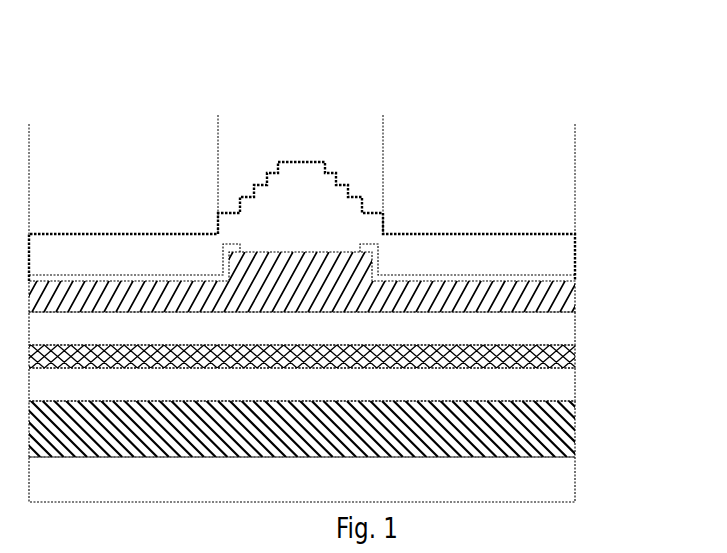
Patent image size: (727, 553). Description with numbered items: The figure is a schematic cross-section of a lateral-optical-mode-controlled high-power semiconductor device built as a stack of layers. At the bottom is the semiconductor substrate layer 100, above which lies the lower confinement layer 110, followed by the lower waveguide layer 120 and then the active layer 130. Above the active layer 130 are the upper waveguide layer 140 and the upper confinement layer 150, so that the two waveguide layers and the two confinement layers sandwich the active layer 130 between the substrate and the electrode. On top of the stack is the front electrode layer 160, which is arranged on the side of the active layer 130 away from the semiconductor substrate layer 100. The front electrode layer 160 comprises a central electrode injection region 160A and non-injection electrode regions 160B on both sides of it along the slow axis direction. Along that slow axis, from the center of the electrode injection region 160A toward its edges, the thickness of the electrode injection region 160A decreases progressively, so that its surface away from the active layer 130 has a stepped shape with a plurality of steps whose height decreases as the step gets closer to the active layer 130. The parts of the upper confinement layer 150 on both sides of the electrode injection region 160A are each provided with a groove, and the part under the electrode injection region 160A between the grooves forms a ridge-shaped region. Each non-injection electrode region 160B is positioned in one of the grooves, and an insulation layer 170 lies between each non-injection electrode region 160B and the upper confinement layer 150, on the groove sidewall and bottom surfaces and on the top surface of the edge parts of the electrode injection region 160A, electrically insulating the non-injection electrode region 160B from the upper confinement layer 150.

The semiconductor substrate layer 100 is at (530, 489).
The lower confinement layer 110 is at (530, 433).
The lower waveguide layer 120 is at (530, 393).
The active layer 130 is at (532, 353).
The upper waveguide layer 140 is at (533, 325).
The upper confinement layer 150 is at (530, 295).
The front electrode layer 160 is at (293, 100).
The electrode injection region 160A is at (366, 129).
The non-injection electrode regions 160B is at (201, 143).
The insulation layer 170 is at (533, 277).